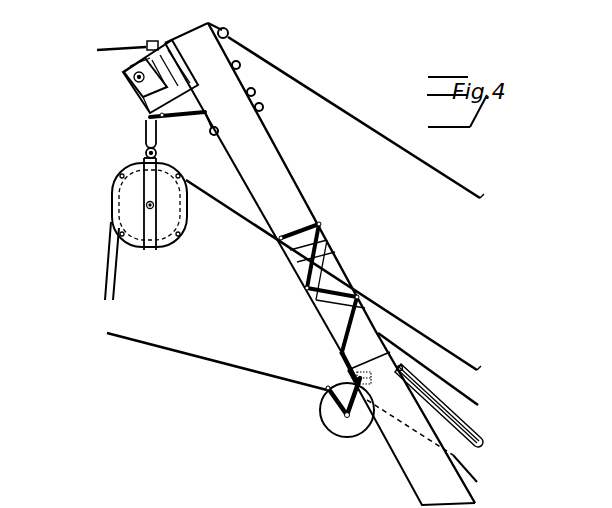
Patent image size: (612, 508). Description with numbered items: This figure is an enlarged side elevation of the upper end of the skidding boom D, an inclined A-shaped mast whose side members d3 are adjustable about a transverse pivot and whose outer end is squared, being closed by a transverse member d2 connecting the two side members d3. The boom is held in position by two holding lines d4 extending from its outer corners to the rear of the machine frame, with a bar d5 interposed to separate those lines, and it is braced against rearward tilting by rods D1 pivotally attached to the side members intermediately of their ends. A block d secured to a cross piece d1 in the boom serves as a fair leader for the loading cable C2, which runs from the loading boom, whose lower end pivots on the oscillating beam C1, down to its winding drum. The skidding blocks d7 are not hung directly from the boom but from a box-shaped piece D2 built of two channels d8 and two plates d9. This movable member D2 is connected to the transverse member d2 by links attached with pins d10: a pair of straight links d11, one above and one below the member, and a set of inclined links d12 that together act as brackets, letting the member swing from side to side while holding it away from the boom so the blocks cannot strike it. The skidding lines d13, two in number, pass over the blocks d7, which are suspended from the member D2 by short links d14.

The skidding boom D is at (296, 204).
The brace rod D1 is at (455, 418).
The box-shaped piece D2 is at (124, 80).
The block d is at (347, 433).
The cross piece d1 is at (420, 348).
The transverse member d2 is at (238, 30).
The side members d3 is at (422, 480).
The holding lines d4 is at (381, 133).
The bar d5 is at (142, 110).
The skidding blocks d7 is at (112, 200).
The channels d8 is at (163, 80).
The plates d9 is at (183, 92).
The pins d10 is at (220, 126).
The straight links d11 is at (73, 165).
The inclined links d12 is at (182, 121).
The skidding lines d13 is at (503, 370).
The short links d14 is at (146, 143).
The oscillating beam C1 is at (105, 61).
The loading cable C2 is at (221, 361).